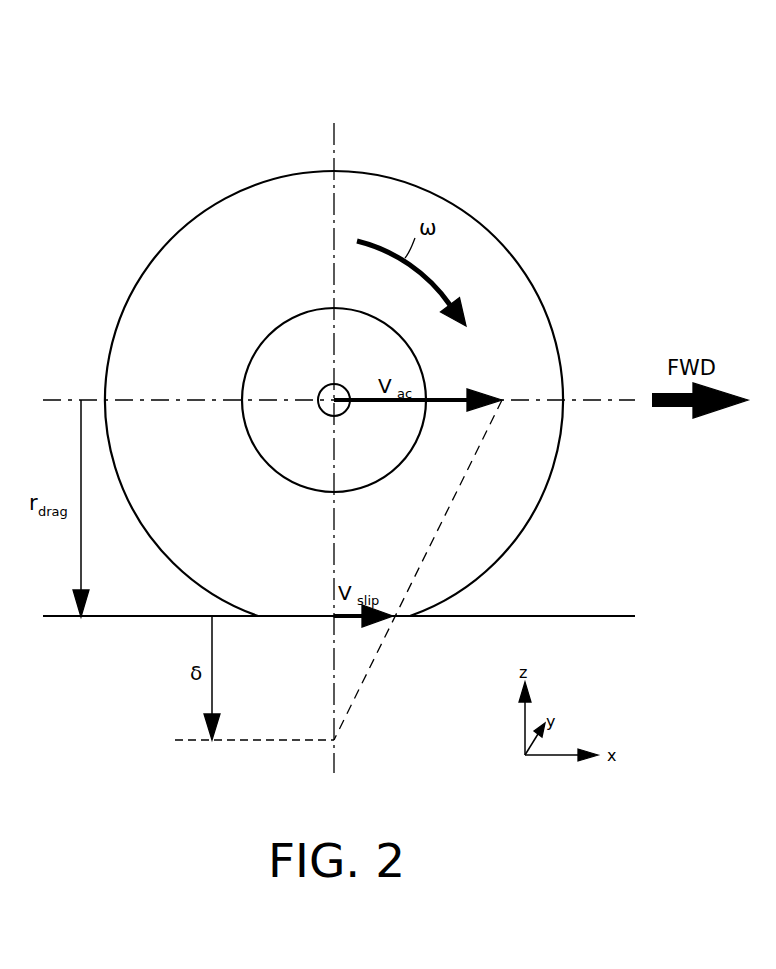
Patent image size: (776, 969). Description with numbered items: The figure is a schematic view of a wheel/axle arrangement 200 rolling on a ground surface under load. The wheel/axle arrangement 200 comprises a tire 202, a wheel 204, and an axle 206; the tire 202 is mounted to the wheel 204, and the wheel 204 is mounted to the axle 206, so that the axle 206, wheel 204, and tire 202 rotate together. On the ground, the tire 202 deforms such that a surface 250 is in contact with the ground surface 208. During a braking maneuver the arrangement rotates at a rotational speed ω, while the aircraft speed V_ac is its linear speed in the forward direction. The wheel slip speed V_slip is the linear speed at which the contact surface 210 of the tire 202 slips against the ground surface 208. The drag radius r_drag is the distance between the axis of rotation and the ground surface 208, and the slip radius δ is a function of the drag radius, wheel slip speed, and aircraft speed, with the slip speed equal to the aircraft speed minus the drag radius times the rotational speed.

The wheel/axle arrangement 200 is at (356, 317).
The tire 202 is at (386, 193).
The wheel 204 is at (288, 437).
The axle 206 is at (340, 412).
The ground surface 208 is at (628, 616).
The contact surface 210 is at (327, 628).
The surface 250 is at (290, 617).